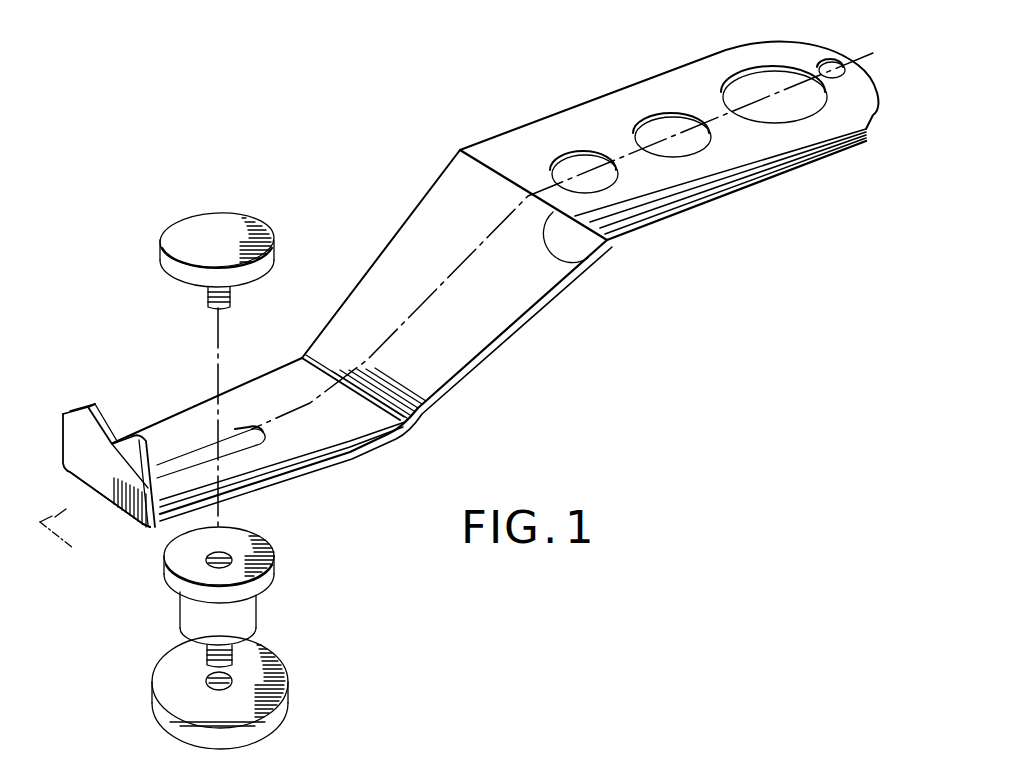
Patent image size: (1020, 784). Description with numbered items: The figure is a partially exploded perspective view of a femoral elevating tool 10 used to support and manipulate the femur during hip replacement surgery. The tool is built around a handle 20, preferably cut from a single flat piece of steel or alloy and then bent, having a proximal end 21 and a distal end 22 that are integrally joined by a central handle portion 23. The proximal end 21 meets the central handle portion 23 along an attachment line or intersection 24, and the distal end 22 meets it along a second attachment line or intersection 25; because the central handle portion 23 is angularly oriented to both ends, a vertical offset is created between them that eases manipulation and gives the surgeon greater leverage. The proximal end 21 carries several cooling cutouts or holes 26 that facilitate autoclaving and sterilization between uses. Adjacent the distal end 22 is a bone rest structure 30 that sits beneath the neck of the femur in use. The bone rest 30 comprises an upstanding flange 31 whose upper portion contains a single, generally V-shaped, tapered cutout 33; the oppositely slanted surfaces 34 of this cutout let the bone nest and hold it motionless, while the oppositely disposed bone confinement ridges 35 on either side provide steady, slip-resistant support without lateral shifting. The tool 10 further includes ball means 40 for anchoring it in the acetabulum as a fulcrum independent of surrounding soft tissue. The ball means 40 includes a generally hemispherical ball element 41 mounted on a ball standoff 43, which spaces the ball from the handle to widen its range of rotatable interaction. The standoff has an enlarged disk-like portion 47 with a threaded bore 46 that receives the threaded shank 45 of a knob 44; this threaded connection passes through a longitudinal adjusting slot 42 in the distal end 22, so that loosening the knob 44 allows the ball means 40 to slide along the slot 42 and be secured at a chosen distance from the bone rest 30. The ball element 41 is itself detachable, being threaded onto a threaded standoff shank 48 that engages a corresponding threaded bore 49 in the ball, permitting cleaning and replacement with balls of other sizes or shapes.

The femoral elevating tool 10 is at (388, 212).
The handle 20 is at (435, 160).
The proximal end 21 is at (790, 143).
The distal end 22 is at (202, 418).
The central handle portion 23 is at (474, 327).
The attachment line or intersection 24 is at (588, 259).
The attachment line or intersection 25 is at (365, 410).
The cooling cutouts or holes 26 is at (681, 120).
The bone rest structure 30 is at (54, 441).
The upstanding flange 31 is at (90, 458).
The cutout 33 is at (109, 421).
The oppositely slanted surfaces 34 is at (78, 462).
The bone confinement ridges 35 is at (90, 408).
The ball means 40 is at (150, 657).
The hemispherical ball element 41 is at (332, 715).
The longitudinal adjusting slot 42 is at (244, 426).
The ball standoff 43 is at (253, 621).
The knob 44 is at (197, 232).
The threaded shank 45 is at (208, 303).
The threaded bore 46 is at (226, 552).
The enlarged disk-like portion 47 is at (173, 590).
The threaded standoff shank 48 is at (232, 662).
The threaded bore 49 is at (232, 679).